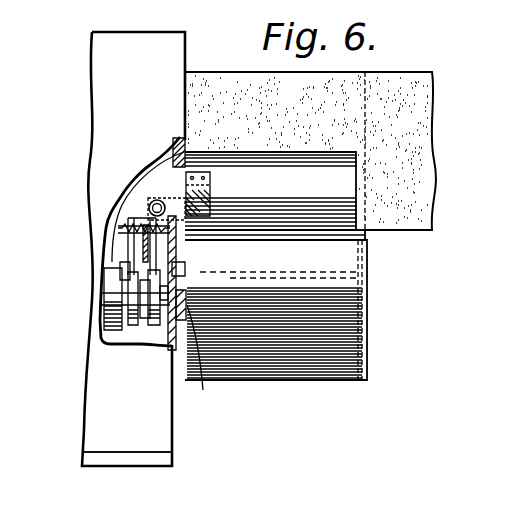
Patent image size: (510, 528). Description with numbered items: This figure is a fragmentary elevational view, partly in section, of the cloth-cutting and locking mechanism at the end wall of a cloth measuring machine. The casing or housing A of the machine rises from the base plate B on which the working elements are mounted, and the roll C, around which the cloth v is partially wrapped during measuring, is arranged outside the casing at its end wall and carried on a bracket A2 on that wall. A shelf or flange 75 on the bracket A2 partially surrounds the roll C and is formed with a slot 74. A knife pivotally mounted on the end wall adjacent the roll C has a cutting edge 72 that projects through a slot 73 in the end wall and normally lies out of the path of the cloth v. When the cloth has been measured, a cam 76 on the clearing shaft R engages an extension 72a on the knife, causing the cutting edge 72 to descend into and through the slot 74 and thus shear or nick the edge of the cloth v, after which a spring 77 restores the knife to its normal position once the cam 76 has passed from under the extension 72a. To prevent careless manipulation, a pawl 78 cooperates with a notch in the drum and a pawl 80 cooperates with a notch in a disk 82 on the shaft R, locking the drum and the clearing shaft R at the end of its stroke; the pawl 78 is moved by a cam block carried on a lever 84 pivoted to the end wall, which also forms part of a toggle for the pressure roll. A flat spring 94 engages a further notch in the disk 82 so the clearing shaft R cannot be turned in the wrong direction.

The casing or housing A is at (100, 62).
The cloth v is at (412, 94).
The cutting edge 72 is at (207, 182).
The slot 73 is at (175, 186).
The spring 77 is at (118, 228).
The extension 72a is at (118, 256).
The pawl 78 is at (110, 268).
The cam 76 is at (112, 292).
The pawl 80 is at (177, 236).
The slot 74 is at (210, 233).
The lever 84 is at (176, 268).
The shelf or flange 75 is at (320, 232).
The roll C is at (364, 272).
The disk 82 is at (152, 306).
The flat spring 94 is at (164, 332).
The clearing shaft R is at (206, 355).
The bracket A2 is at (305, 380).
The base plate B is at (142, 467).